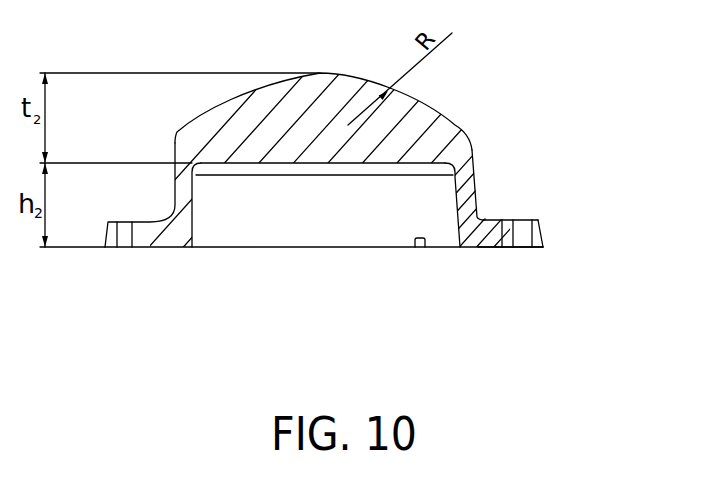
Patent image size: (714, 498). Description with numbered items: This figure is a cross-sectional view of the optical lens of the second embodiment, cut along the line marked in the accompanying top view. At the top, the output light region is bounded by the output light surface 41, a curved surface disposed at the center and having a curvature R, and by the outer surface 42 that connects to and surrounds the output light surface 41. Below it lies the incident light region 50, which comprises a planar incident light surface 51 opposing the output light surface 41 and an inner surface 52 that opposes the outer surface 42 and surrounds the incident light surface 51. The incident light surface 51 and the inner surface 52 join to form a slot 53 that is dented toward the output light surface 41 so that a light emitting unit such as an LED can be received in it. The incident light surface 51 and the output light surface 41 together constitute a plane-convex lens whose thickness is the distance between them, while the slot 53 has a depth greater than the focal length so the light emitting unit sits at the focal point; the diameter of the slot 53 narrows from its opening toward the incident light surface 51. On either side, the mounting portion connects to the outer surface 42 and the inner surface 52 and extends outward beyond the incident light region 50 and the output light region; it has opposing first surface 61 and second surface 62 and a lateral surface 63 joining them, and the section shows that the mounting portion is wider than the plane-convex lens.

The output light surface 41 is at (323, 73).
The outer surface 42 is at (477, 178).
The incident light region 50 is at (325, 253).
The incident light surface 51 is at (285, 158).
The inner surface 52 is at (190, 207).
The slot 53 is at (384, 236).
The first surface 61 is at (523, 220).
The second surface 62 is at (523, 249).
The lateral surface 63 is at (543, 237).